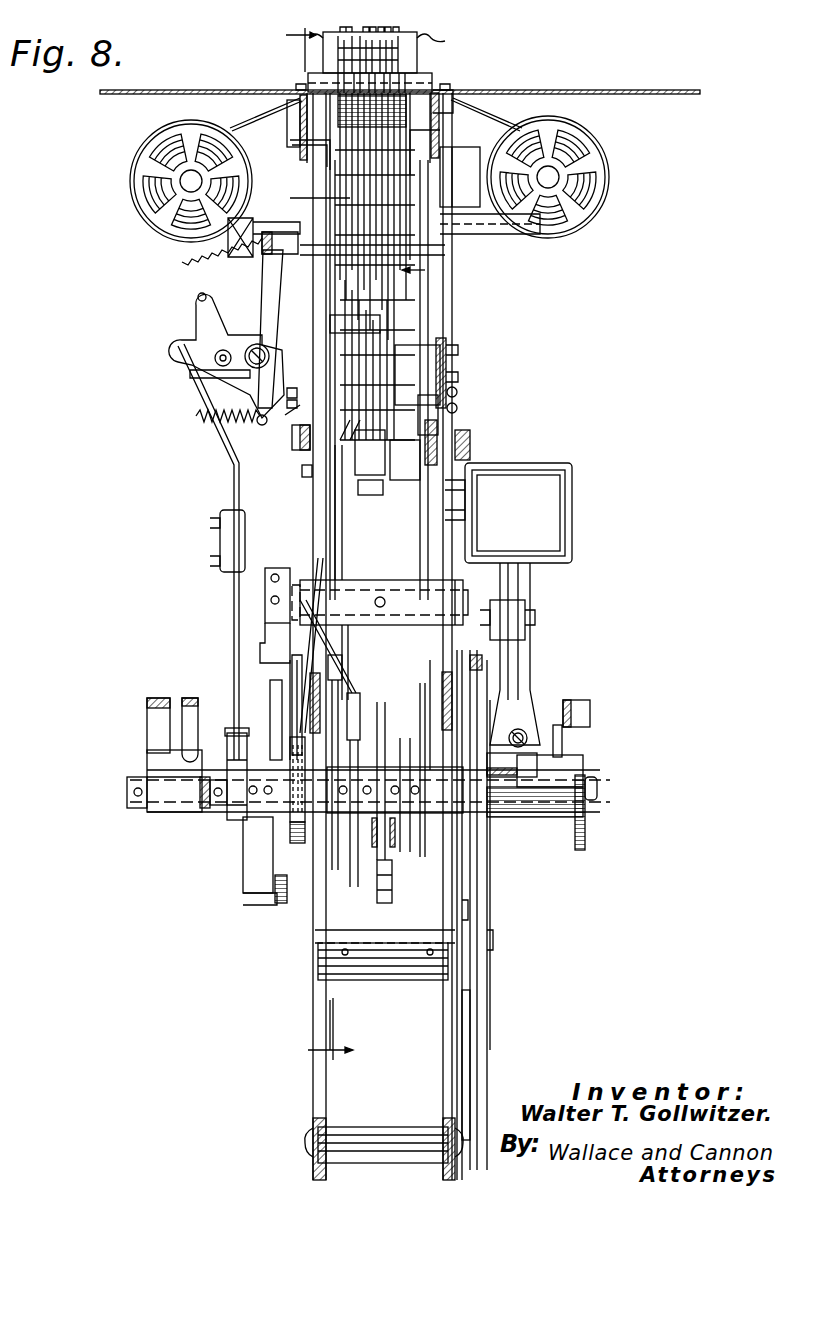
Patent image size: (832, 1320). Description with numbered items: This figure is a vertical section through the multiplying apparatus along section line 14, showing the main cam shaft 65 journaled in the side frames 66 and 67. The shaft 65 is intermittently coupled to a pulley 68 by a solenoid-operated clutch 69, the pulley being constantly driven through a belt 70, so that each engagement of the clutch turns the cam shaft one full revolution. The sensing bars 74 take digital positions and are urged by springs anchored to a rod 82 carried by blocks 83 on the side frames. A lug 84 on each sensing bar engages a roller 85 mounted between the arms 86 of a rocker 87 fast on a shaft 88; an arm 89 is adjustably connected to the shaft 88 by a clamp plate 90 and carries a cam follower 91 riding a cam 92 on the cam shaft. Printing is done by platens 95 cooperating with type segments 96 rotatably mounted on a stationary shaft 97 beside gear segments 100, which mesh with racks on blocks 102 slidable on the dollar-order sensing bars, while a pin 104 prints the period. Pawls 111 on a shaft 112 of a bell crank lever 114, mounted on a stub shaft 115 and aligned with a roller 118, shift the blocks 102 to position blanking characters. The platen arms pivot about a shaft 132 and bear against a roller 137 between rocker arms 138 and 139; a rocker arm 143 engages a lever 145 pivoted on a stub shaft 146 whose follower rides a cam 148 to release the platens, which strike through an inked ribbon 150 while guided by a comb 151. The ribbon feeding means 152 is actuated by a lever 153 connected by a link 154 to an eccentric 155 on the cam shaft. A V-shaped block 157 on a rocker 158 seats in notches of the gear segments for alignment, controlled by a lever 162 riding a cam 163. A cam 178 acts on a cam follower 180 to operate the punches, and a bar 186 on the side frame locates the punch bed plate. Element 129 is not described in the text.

The section line 14 is at (297, 50).
The main cam shaft 65 is at (597, 780).
The side frame 66 is at (313, 495).
The side frame 67 is at (452, 330).
The pulley 68 is at (462, 870).
The solenoid-operated clutch 69 is at (525, 718).
The belt 70 is at (485, 945).
The sensing bars 74 is at (420, 422).
The rod 82 is at (358, 329).
The blocks 83 is at (514, 397).
The lug 84 is at (358, 450).
The roller 85 is at (404, 460).
The arms 86 is at (345, 525).
The rocker 87 is at (405, 577).
The shaft 88 is at (304, 558).
The arm 89 is at (275, 653).
The clamp plate 90 is at (268, 573).
The cam follower 91 is at (265, 730).
The cam 92 is at (275, 900).
The platens 95 is at (395, 58).
The type segments 96 is at (385, 205).
The stationary shaft 97 is at (450, 262).
The gear segments 100 is at (395, 300).
The blocks 102 is at (283, 414).
The pin 104 is at (303, 200).
The pawls 111 is at (365, 332).
The shaft 112 is at (440, 375).
The bell crank lever 114 is at (440, 410).
The stub shaft 115 is at (379, 492).
The roller 118 is at (470, 458).
The link 129 is at (290, 673).
The shaft 132 is at (432, 82).
The roller 137 is at (440, 128).
The arm 138 is at (283, 128).
The arm 139 is at (445, 160).
The arm 143 is at (295, 168).
The lever 145 is at (280, 280).
The stub shaft 146 is at (302, 480).
The cam 148 is at (298, 845).
The inked ribbon 150 is at (500, 108).
The comb 151 is at (417, 33).
The ribbon feeding means 152 is at (176, 248).
The lever 153 is at (200, 318).
The link 154 is at (228, 486).
The eccentric 155 is at (233, 823).
The V-shaped block 157 is at (380, 325).
The rocker 158 is at (425, 270).
The lever 162 is at (345, 640).
The cam 163 is at (362, 710).
The cam 178 is at (385, 718).
The cam follower 180 is at (372, 895).
The bar 186 is at (292, 440).